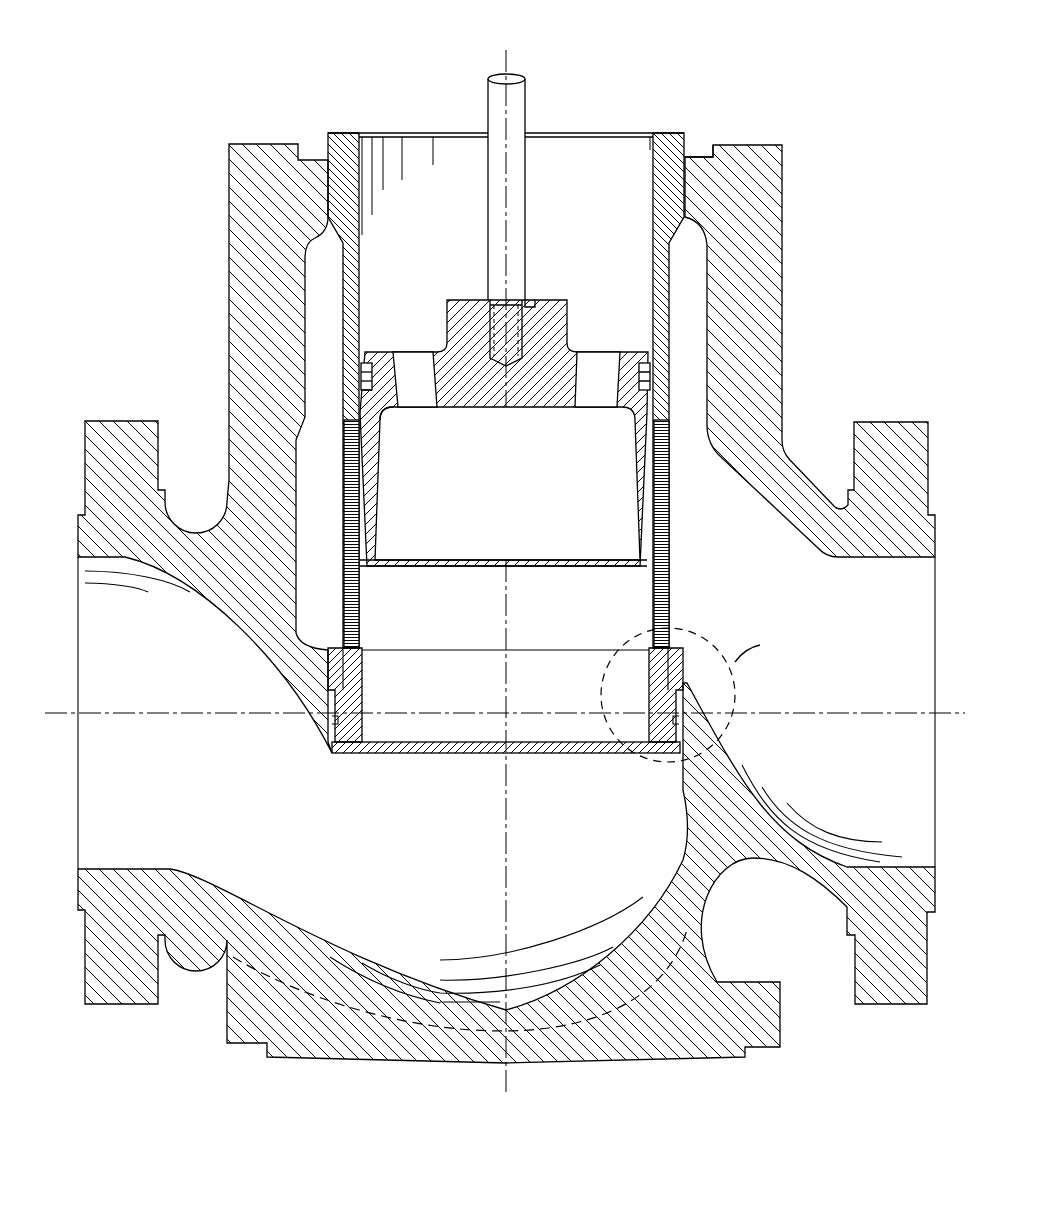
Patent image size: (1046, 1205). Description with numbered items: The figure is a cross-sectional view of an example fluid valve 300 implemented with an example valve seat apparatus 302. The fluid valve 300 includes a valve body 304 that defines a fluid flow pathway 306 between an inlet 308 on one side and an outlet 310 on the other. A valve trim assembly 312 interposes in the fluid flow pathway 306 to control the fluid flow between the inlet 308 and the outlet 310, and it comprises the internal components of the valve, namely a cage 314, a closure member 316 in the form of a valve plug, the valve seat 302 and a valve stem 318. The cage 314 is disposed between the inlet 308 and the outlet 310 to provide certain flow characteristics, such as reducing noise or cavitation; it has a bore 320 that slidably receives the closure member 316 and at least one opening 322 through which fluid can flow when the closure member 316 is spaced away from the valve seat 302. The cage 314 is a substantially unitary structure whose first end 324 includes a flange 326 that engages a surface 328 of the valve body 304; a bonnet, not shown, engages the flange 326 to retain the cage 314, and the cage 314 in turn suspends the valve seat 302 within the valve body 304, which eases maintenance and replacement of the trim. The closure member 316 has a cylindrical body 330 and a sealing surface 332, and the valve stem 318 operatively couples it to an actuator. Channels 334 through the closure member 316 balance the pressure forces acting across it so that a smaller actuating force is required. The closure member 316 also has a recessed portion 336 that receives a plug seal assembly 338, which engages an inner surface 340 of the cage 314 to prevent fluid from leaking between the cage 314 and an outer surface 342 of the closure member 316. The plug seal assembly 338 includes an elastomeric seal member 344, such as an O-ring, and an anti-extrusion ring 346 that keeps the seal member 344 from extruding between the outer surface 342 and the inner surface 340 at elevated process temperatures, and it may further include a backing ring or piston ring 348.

The fluid valve 300 is at (822, 96).
The valve seat apparatus 302 is at (353, 720).
The valve body 304 is at (707, 907).
The fluid flow pathway 306 is at (353, 916).
The inlet 308 is at (83, 647).
The outlet 310 is at (935, 745).
The valve trim assembly 312 is at (463, 272).
The cage 314 is at (663, 330).
The closure member 316 is at (640, 480).
The valve stem 318 is at (527, 104).
The bore 320 is at (654, 178).
The opening 322 is at (354, 607).
The first end 324 is at (668, 133).
The flange 326 is at (703, 156).
The surface 328 is at (700, 182).
The cylindrical body 330 is at (380, 510).
The sealing surface 332 is at (367, 567).
The channels 334 is at (418, 351).
The recessed portion 336 is at (645, 380).
The plug seal assembly 338 is at (360, 373).
The inner surface 340 is at (654, 270).
The outer surface 342 is at (362, 418).
The seal member 344 is at (360, 386).
The anti-extrusion ring 346 is at (360, 380).
The piston ring 348 is at (361, 372).